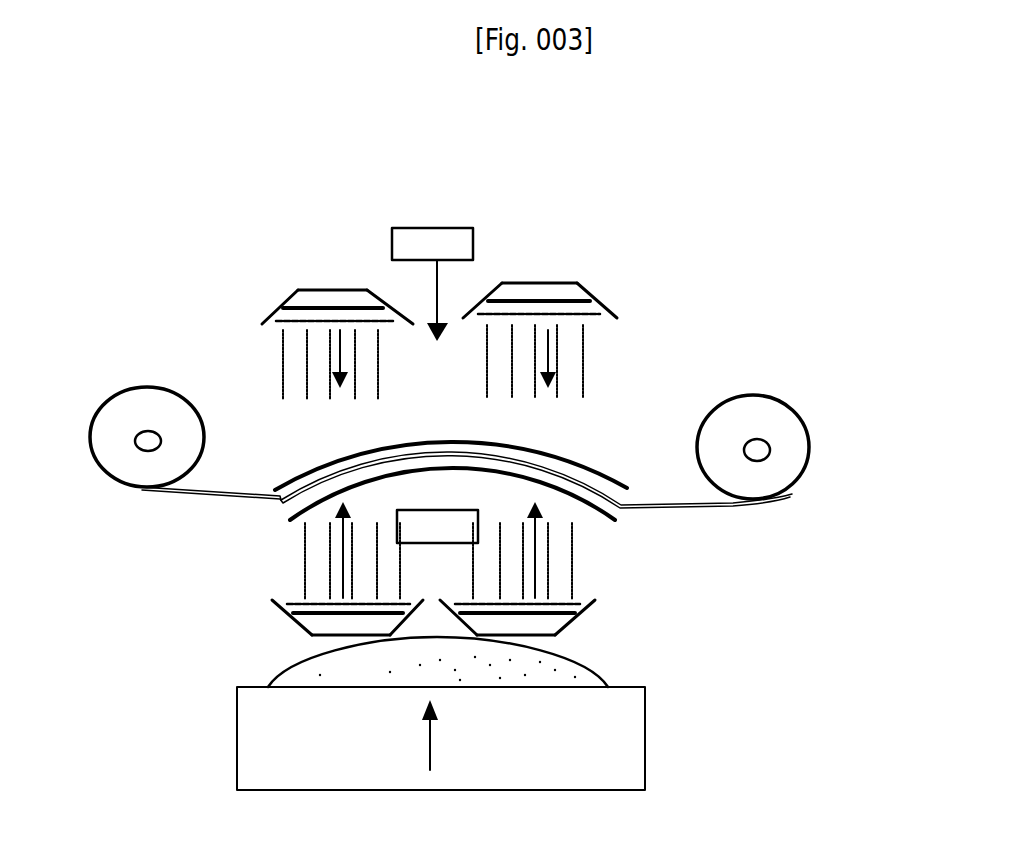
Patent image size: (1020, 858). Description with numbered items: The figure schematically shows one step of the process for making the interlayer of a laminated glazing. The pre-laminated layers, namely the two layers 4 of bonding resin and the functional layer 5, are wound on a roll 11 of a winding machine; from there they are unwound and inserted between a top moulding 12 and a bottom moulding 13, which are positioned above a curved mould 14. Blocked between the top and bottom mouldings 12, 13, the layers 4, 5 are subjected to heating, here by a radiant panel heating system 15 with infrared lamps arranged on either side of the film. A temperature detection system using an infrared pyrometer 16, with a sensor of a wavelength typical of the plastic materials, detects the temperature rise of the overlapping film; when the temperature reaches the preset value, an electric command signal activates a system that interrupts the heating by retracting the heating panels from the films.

The layer of bonding resin 4 is at (740, 508).
The functional layer 5 is at (697, 513).
The roll 11 is at (120, 387).
The top moulding 12 is at (603, 470).
The bottom moulding 13 is at (598, 512).
The curved mould 14 is at (605, 684).
The radiant panel heating system 15 is at (557, 283).
The infrared pyrometer 16 is at (447, 228).